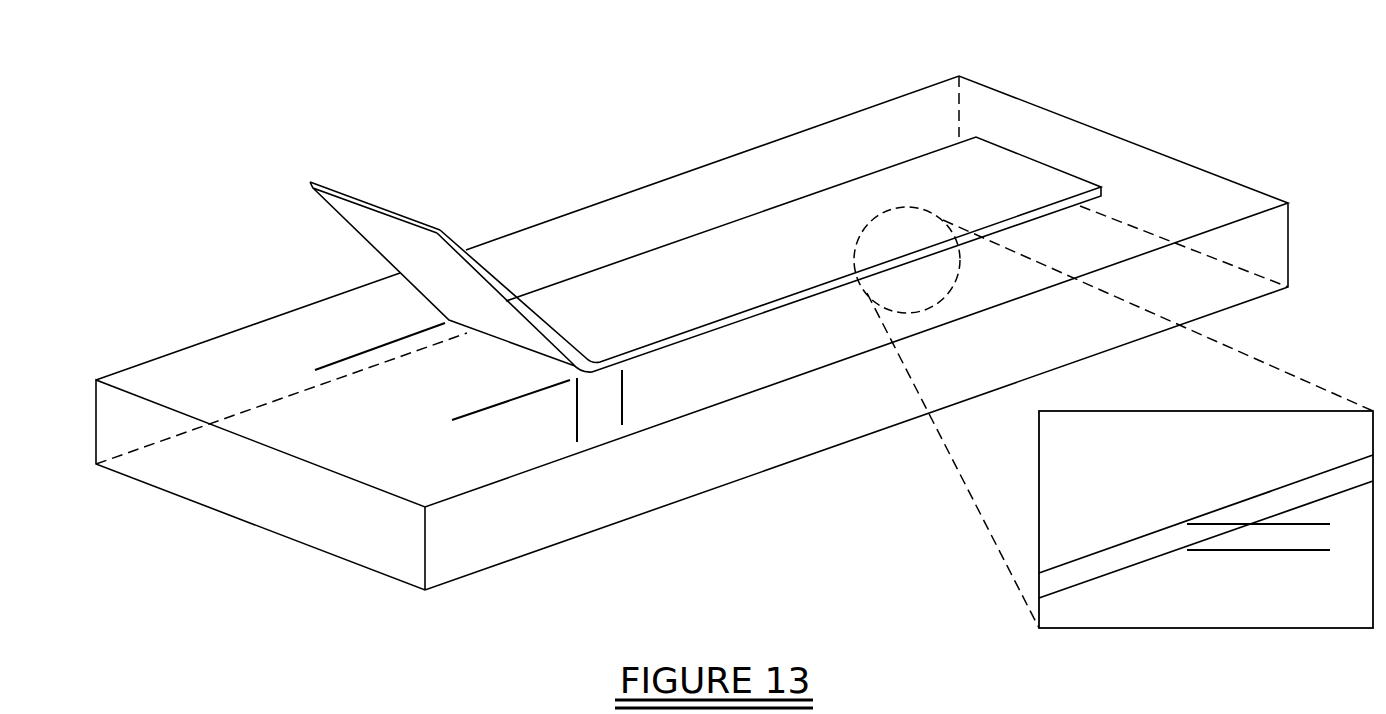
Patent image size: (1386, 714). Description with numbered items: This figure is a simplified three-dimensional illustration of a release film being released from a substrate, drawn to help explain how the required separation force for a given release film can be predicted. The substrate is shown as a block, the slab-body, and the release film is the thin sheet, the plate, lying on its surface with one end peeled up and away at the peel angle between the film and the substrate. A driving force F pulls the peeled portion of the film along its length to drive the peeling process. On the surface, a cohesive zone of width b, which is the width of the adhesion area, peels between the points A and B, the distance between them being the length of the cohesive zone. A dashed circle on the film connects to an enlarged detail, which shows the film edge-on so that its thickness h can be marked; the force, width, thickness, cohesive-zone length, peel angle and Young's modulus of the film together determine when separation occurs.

The driving force F is at (375, 207).
The width of the adhesion area b is at (470, 415).
The point A is at (557, 410).
The point B is at (637, 397).
The thickness of the film h is at (1307, 468).
The substrate block slab-body is at (692, 333).
The peeled strip plate is at (705, 254).
The detail view of strip detail is at (1113, 417).